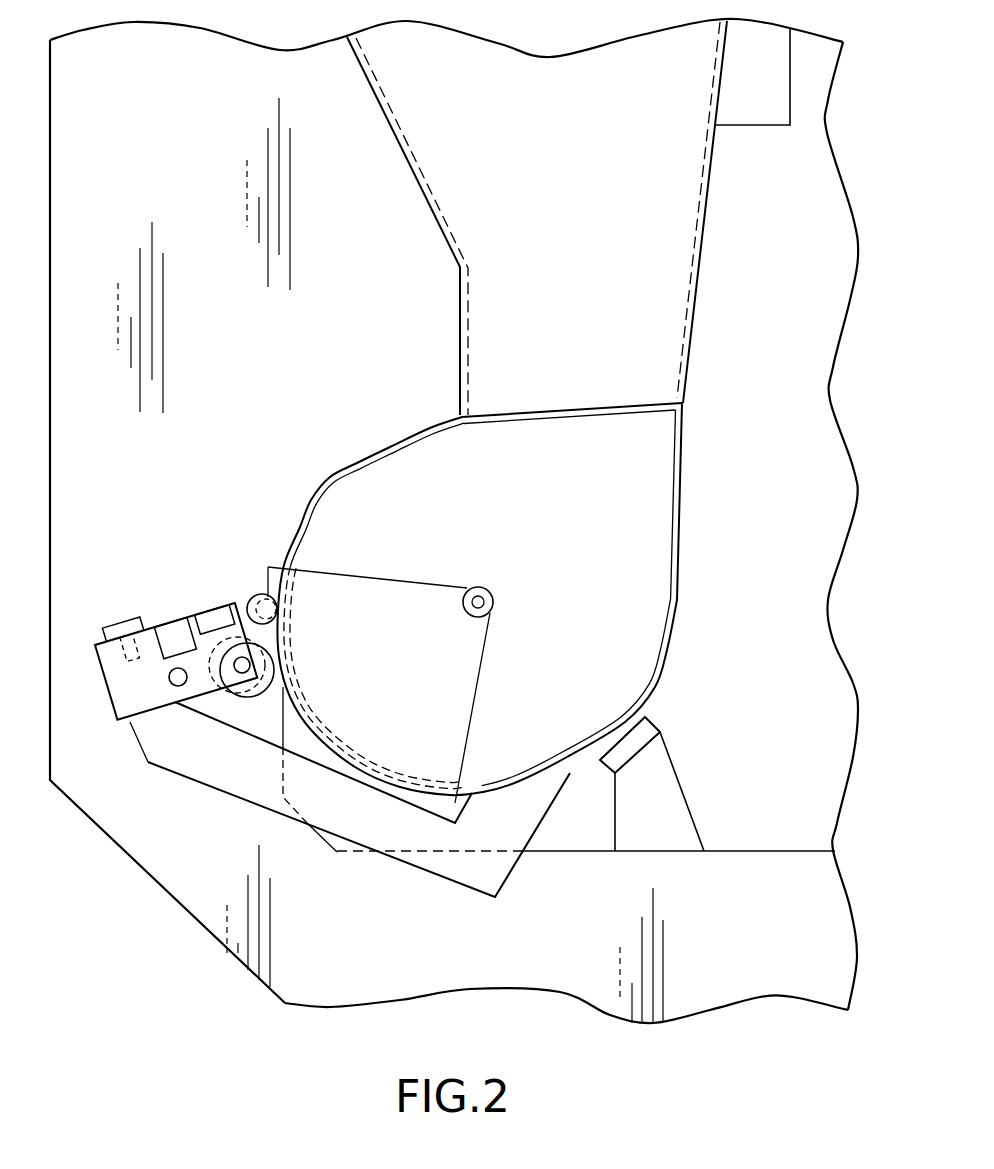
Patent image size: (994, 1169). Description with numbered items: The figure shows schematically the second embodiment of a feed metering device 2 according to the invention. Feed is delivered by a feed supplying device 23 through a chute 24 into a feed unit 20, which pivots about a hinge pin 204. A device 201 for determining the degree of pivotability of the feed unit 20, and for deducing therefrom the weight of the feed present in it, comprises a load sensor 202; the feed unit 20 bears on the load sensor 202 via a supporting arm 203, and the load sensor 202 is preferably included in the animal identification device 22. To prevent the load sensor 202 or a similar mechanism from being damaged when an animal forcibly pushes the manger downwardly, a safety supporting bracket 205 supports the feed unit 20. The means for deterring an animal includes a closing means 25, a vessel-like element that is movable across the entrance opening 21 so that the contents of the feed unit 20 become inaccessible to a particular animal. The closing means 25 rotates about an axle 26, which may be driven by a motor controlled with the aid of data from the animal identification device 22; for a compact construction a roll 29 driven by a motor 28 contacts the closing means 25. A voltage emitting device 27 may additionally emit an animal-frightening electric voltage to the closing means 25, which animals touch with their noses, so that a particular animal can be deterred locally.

The feed metering device 2 is at (693, 545).
The feed unit 20 is at (653, 687).
The entrance opening 21 is at (360, 450).
The animal identification device 22 is at (172, 672).
The feed supplying device 23 is at (750, 115).
The chute 24 is at (700, 290).
The closing means 25 is at (312, 588).
The axle 26 is at (494, 600).
The voltage emitting device 27 is at (212, 617).
The motor 28 is at (178, 686).
The roll 29 is at (240, 696).
The device for determining the degree of pivotability 201 is at (167, 633).
The load sensor 202 is at (133, 705).
The supporting arm 203 is at (370, 830).
The hinge pin 204 is at (260, 593).
The safety supporting bracket 205 is at (667, 800).